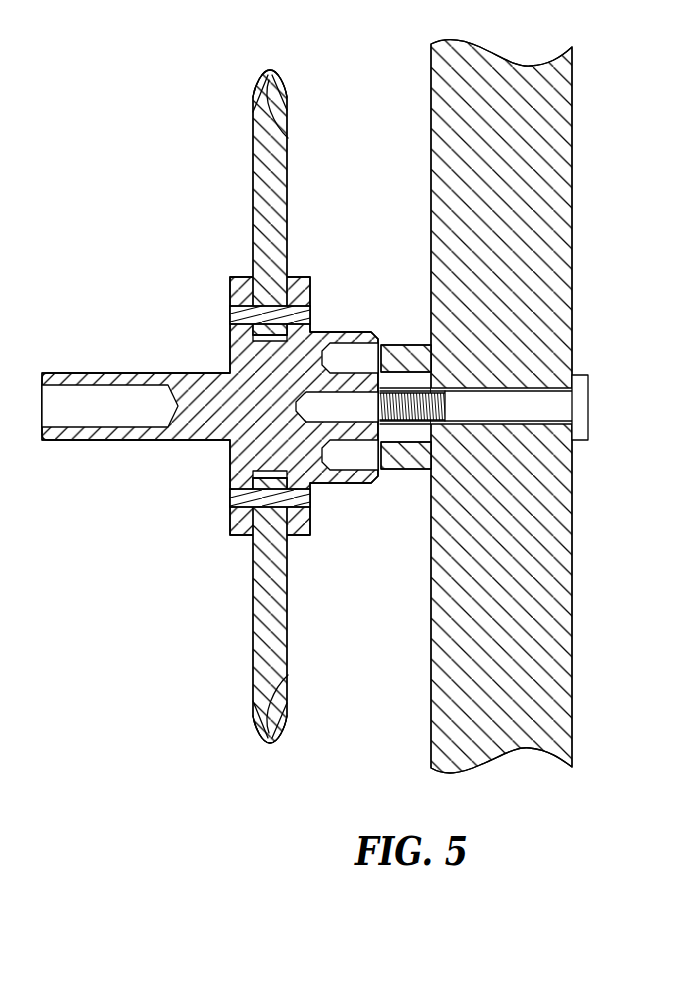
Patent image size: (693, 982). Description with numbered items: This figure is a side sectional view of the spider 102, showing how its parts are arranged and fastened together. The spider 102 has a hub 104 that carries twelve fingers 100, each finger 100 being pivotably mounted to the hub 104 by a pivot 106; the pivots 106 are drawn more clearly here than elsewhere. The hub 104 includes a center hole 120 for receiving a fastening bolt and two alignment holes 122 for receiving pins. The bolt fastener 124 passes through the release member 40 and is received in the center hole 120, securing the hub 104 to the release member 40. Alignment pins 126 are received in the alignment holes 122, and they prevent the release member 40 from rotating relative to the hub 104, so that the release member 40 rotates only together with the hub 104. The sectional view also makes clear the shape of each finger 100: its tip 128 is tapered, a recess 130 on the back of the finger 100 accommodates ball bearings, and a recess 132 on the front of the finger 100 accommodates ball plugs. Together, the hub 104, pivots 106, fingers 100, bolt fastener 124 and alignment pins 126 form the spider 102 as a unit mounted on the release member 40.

The release member 40 is at (573, 107).
The finger 100 is at (277, 395).
The spider 102 is at (158, 79).
The hub 104 is at (322, 263).
The pivot 106 is at (231, 314).
The center hole 120 is at (356, 417).
The alignment hole 122 is at (354, 356).
The bolt fastener 124 is at (581, 397).
The alignment pin 126 is at (414, 355).
The tip 128 is at (289, 137).
The recess 130 is at (262, 88).
The recess 132 is at (282, 82).